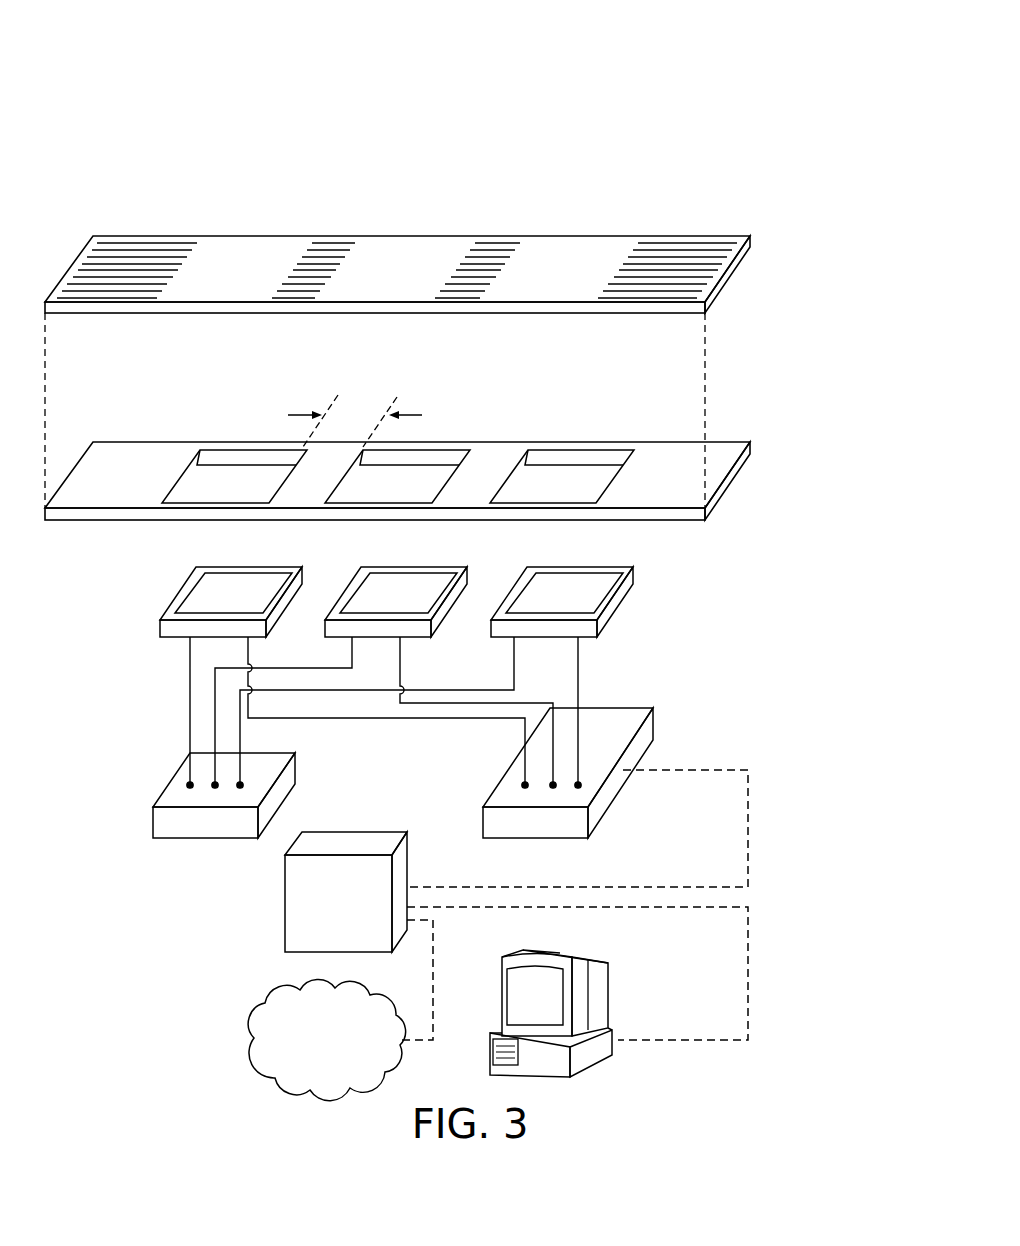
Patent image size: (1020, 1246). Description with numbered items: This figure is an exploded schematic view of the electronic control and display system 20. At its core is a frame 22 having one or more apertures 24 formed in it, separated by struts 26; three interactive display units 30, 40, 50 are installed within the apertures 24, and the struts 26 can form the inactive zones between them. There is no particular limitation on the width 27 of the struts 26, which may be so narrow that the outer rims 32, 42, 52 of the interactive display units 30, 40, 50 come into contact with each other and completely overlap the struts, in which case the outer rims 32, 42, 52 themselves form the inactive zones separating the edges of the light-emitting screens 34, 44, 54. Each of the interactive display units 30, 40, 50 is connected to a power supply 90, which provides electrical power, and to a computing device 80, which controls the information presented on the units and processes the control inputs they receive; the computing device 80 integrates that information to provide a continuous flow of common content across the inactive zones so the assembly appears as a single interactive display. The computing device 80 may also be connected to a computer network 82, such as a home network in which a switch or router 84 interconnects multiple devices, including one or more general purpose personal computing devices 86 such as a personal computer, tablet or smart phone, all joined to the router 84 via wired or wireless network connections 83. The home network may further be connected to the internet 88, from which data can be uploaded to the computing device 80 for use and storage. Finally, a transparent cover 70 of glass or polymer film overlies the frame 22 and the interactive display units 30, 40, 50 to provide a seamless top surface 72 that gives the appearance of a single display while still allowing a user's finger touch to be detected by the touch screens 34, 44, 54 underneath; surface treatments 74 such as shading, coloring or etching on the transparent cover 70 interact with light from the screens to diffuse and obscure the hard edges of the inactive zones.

The electronic control and display system 20 is at (712, 74).
The frame 22 is at (655, 442).
The apertures 24 is at (248, 445).
The struts 26 is at (320, 468).
The width 27 is at (363, 408).
The interactive display unit 30 is at (432, 637).
The outer rim 32 is at (358, 578).
The light-emitting screen 34 is at (400, 587).
The interactive display unit 40 is at (267, 637).
The outer rim 42 is at (195, 578).
The light-emitting screen 44 is at (246, 587).
The interactive display unit 50 is at (597, 637).
The outer rim 52 is at (525, 578).
The light-emitting screen 54 is at (553, 587).
The transparent cover 70 is at (546, 237).
The seamless top surface 72 is at (190, 252).
The surface treatments 74 is at (360, 222).
The computing device 80 is at (653, 728).
The computer network 82 is at (201, 891).
The network connections 83 is at (750, 828).
The router 84 is at (285, 900).
The general purpose personal computing device 86 is at (613, 1047).
The internet 88 is at (250, 1030).
The power supply 90 is at (153, 823).